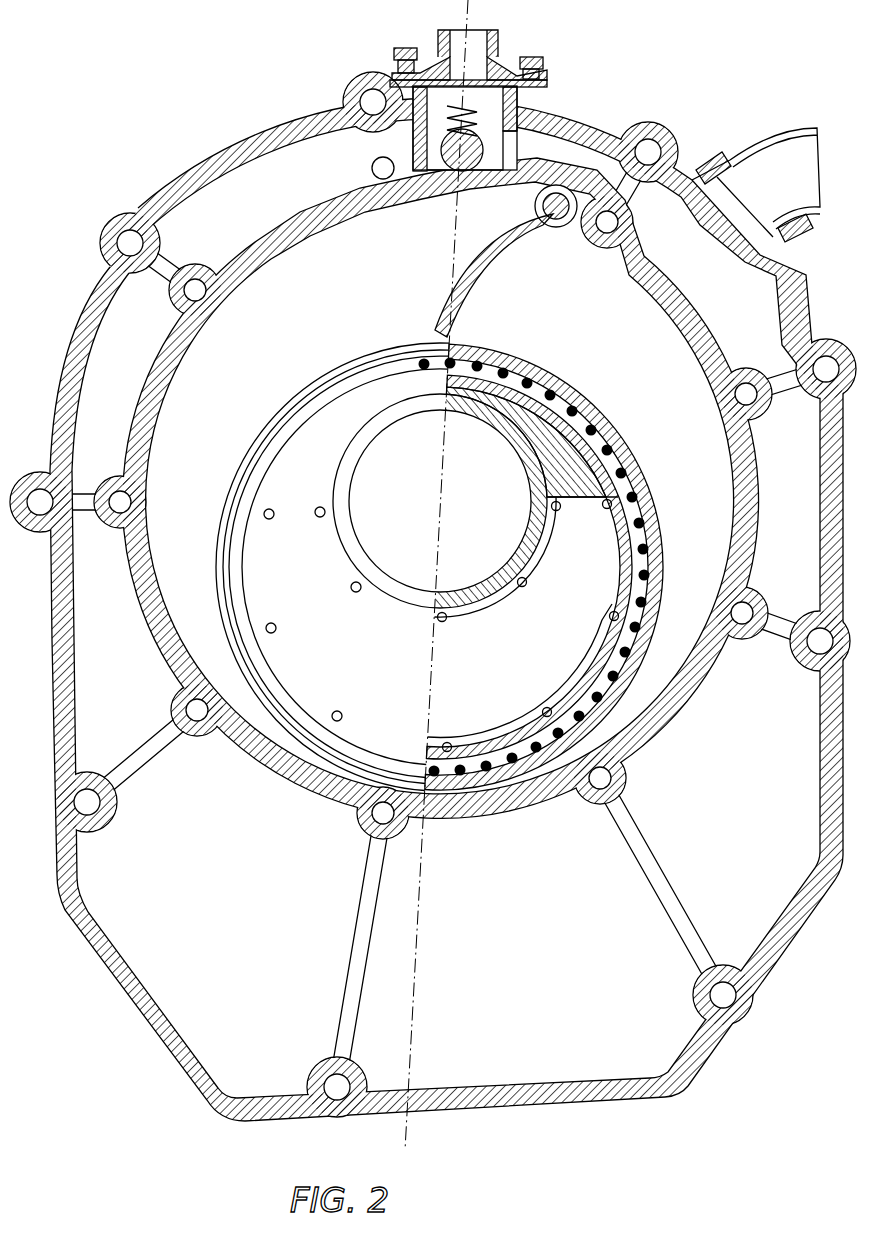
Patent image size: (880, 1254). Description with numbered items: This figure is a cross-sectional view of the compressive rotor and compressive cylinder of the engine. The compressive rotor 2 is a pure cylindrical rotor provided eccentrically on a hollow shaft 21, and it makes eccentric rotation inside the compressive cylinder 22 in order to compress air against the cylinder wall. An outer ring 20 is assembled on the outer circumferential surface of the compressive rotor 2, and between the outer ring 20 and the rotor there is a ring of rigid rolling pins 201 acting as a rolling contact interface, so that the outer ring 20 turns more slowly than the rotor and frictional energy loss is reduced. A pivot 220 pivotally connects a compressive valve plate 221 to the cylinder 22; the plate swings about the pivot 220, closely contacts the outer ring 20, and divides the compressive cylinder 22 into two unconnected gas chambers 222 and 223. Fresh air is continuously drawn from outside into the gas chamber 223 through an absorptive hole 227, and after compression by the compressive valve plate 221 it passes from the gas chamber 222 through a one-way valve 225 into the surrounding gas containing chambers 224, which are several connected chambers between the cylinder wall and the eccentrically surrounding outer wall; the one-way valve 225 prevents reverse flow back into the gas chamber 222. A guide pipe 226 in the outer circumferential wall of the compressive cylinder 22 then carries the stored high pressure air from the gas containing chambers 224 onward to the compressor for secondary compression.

The compressive rotor 2 is at (574, 444).
The outer ring 20 is at (652, 500).
The hollow shaft 21 is at (374, 424).
The compressive cylinder 22 is at (502, 807).
The rigid rolling pins 201 is at (624, 482).
The pivot 220 is at (534, 208).
The compressive valve plate 221 is at (505, 253).
The gas chamber 222 is at (173, 590).
The gas chamber 223 is at (680, 651).
The gas containing chambers 224 is at (245, 190).
The one-way valve 225 is at (518, 128).
The guide pipe 226 is at (486, 44).
The absorptive hole 227 is at (790, 160).